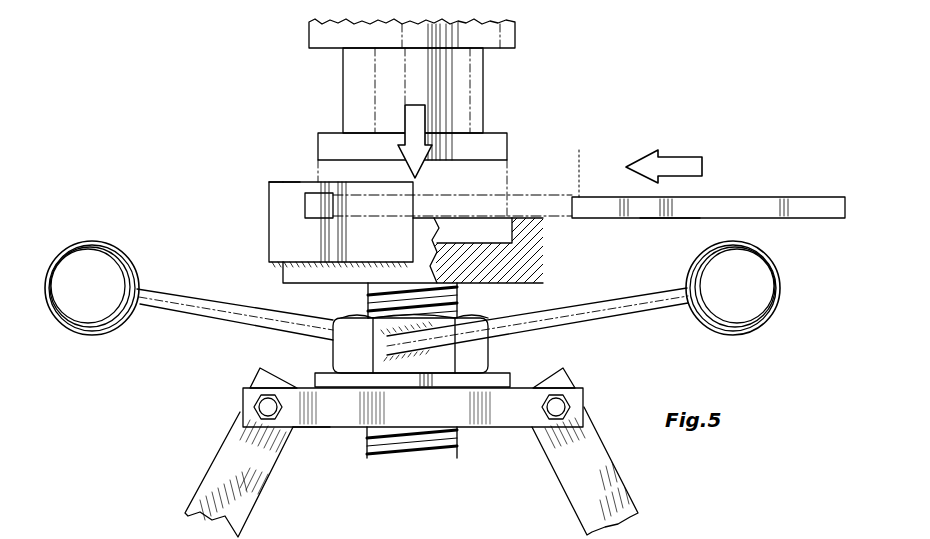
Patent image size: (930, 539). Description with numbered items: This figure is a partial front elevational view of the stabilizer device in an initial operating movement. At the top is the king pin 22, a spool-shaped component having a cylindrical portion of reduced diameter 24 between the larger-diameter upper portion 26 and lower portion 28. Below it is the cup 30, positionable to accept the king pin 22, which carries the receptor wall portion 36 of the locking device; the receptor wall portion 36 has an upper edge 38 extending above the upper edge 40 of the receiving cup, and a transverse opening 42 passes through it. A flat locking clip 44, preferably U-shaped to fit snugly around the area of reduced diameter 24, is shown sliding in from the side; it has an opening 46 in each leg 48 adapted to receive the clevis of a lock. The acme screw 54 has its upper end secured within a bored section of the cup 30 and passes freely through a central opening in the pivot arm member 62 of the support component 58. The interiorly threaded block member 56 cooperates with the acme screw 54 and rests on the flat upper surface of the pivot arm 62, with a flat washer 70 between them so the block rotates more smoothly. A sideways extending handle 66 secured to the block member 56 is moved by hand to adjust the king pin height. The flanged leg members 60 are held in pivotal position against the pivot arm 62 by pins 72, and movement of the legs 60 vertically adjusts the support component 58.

The king pin 22 is at (490, 98).
The cylindrical portion of reduced diameter 24 is at (343, 85).
The upper portion 26 is at (515, 38).
The lower portion 28 is at (507, 147).
The cup 30 is at (262, 242).
The receptor wall portion 36 is at (269, 184).
The upper edge 38 is at (283, 182).
The upper edge 40 is at (543, 215).
The transverse opening 42 is at (305, 206).
The flat locking clip 44 is at (738, 197).
The opening 46 is at (578, 162).
The leg 48 is at (670, 218).
The acme screw 54 is at (360, 440).
The block member 56 is at (333, 356).
The support component 58 is at (488, 434).
The legs 60 is at (217, 457).
The pivot arm member 62 is at (315, 427).
The handle 66 is at (200, 318).
The flat washer 70 is at (490, 366).
The pins 72 is at (243, 410).